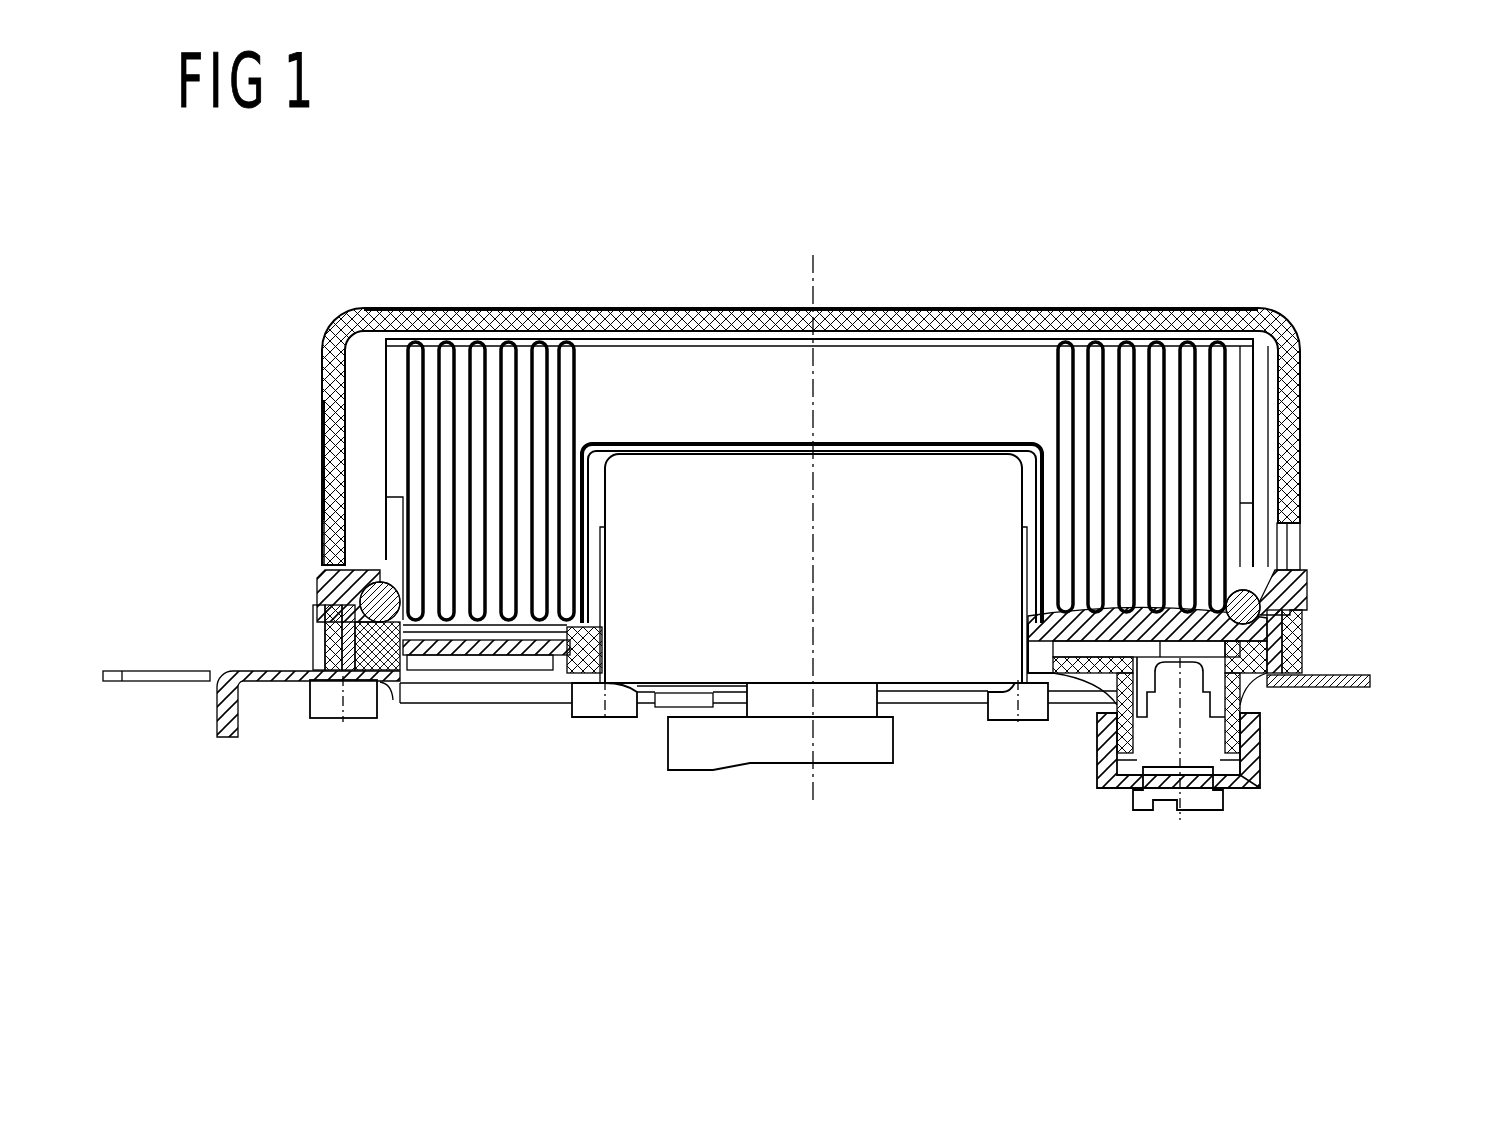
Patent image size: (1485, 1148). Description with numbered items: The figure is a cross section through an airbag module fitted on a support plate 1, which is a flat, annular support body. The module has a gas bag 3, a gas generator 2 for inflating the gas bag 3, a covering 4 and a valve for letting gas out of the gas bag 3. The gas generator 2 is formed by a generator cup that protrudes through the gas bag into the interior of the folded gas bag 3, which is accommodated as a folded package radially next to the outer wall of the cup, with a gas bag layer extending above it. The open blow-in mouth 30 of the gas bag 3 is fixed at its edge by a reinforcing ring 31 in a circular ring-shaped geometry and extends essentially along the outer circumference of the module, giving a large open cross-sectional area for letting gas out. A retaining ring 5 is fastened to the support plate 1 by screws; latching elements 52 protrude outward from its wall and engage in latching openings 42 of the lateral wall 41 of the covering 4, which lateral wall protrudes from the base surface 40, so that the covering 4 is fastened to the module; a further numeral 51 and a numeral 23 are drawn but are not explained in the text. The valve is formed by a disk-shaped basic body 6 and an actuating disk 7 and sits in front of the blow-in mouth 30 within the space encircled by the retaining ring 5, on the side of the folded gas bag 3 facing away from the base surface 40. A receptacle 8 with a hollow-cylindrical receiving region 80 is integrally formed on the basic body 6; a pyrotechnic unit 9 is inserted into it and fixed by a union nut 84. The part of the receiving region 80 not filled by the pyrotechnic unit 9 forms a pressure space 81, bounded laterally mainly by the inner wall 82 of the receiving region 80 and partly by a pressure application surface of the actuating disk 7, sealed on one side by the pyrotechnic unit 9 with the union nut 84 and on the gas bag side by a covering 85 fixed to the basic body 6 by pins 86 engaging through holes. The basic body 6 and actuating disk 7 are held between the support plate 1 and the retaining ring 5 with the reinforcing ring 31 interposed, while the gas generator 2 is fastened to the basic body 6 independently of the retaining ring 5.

The support plate 1 is at (208, 692).
The gas generator 2 is at (891, 578).
The gas bag 3 is at (378, 410).
The covering 4 is at (953, 307).
The retaining ring 5 is at (1290, 645).
The basic body 6 is at (393, 692).
The actuating disk 7 is at (497, 662).
The receptacle 8 is at (1107, 795).
The pyrotechnic unit 9 is at (1160, 772).
The pole piece 23 is at (615, 710).
The blow-in mouth 30 is at (330, 622).
The reinforcing ring 31 is at (348, 578).
The base surface 40 is at (558, 308).
The lateral wall 41 is at (330, 385).
The latching openings 42 is at (324, 525).
The retaining ring 51 is at (1290, 575).
The latching elements 52 is at (1300, 598).
The receiving region 80 is at (1250, 735).
The pressure space 81 is at (1248, 700).
The inner wall 82 is at (1100, 735).
The union nut 84 is at (1250, 792).
The covering 85 is at (1170, 620).
The pins 86 is at (1048, 662).